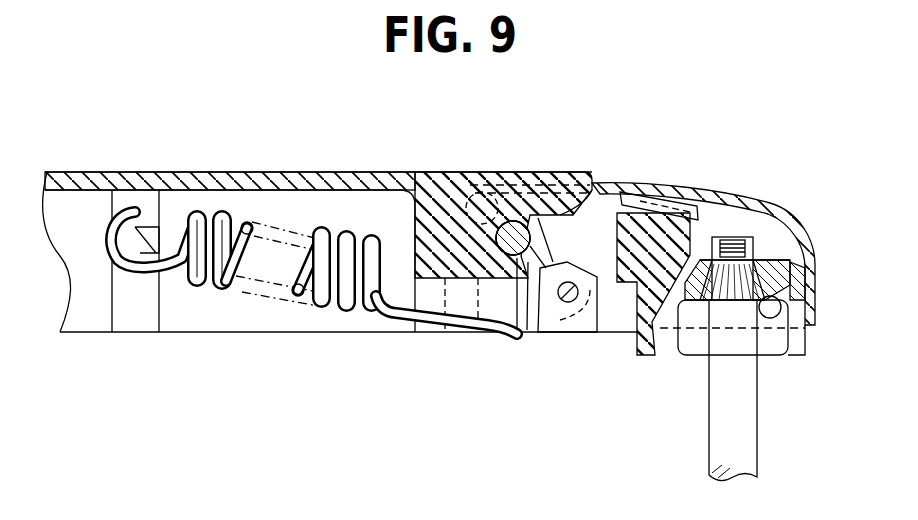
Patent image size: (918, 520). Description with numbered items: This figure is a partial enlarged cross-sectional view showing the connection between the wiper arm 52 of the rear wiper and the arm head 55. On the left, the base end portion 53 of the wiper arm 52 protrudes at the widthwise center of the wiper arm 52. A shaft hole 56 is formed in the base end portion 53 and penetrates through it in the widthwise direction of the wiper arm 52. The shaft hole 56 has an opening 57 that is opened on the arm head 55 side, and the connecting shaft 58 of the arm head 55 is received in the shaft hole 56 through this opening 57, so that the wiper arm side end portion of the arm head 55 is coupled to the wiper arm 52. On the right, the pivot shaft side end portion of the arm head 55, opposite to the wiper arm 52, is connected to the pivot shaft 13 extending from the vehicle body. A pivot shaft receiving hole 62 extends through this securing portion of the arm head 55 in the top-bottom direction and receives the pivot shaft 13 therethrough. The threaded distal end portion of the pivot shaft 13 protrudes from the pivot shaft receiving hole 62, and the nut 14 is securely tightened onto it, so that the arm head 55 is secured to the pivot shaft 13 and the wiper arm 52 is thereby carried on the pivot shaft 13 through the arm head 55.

The wiper arm 52 is at (350, 180).
The base end portion 53 is at (522, 185).
The shaft hole 56 is at (478, 190).
The opening 57 is at (548, 188).
The connecting shaft 58 is at (515, 332).
The arm head 55 is at (631, 330).
The nut 14 is at (752, 248).
The pivot shaft receiving hole 62 is at (806, 296).
The pivot shaft 13 is at (757, 377).